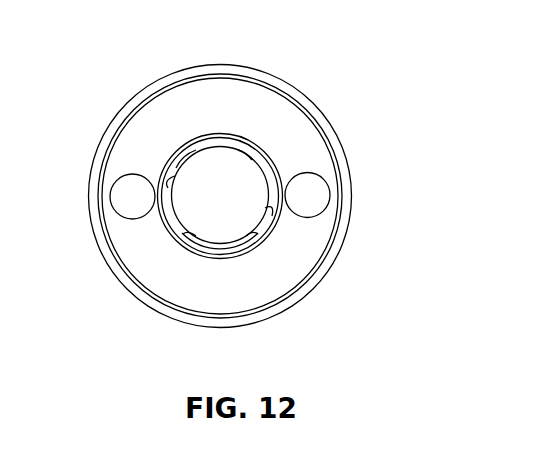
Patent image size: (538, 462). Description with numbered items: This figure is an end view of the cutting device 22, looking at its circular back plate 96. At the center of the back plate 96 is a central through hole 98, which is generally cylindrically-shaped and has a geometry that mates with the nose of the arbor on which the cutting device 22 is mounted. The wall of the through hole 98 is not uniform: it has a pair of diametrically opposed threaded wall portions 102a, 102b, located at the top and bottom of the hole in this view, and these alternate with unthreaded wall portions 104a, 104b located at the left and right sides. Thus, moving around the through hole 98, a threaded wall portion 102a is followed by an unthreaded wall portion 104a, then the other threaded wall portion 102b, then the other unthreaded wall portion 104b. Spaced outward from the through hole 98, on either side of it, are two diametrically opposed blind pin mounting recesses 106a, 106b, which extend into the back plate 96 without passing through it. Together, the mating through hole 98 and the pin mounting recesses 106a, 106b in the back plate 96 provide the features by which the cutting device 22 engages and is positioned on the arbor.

The cutting device 22 is at (335, 68).
The circular back plate 96 is at (300, 262).
The central through hole 98 is at (237, 188).
The threaded wall portion 102a is at (220, 147).
The threaded wall portion 102b is at (220, 244).
The unthreaded wall portion 104a is at (174, 177).
The unthreaded wall portion 104b is at (268, 208).
The blind pin mounting recess 106a is at (131, 197).
The blind pin mounting recess 106b is at (312, 193).